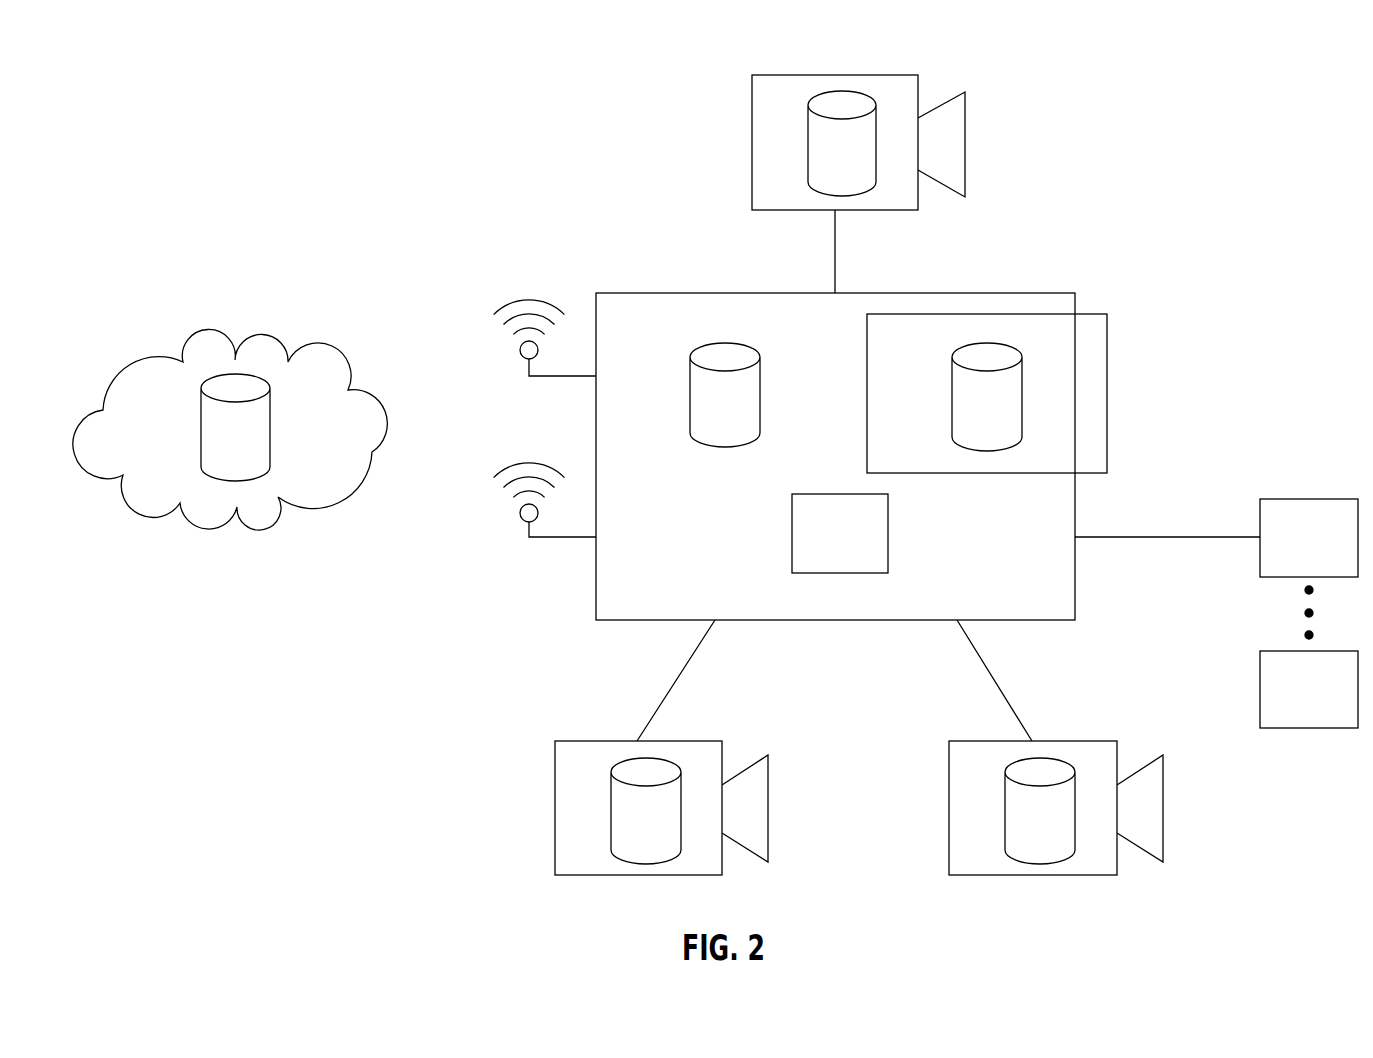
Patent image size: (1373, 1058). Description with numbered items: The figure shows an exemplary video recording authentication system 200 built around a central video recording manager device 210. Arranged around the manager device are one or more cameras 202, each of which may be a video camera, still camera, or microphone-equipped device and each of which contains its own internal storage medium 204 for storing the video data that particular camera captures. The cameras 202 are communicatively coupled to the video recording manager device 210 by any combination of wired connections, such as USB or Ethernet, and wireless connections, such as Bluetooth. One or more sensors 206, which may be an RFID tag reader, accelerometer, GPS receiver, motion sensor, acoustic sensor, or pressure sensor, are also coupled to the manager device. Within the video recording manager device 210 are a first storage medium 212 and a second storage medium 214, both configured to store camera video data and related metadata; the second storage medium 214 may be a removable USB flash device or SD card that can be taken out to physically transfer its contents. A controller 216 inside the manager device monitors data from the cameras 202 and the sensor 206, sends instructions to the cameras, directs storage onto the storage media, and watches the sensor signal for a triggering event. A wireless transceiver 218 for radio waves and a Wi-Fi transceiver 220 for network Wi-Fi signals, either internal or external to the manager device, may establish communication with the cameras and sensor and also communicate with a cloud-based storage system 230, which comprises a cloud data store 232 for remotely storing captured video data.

The video recording authentication system 200 is at (1132, 72).
The cameras 202 is at (822, 75).
The internal storage medium 204 is at (808, 140).
The sensor 206 is at (1296, 499).
The video recording manager device 210 is at (668, 293).
The first storage medium 212 is at (688, 400).
The second storage medium 214 is at (1108, 395).
The controller 216 is at (840, 494).
The wireless transceiver 218 is at (508, 307).
The Wi-Fi transceiver 220 is at (508, 467).
The cloud-based storage system 230 is at (127, 362).
The cloud data store 232 is at (200, 428).